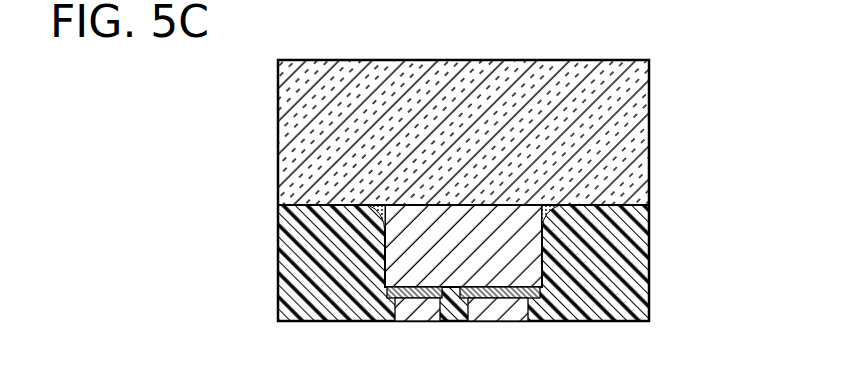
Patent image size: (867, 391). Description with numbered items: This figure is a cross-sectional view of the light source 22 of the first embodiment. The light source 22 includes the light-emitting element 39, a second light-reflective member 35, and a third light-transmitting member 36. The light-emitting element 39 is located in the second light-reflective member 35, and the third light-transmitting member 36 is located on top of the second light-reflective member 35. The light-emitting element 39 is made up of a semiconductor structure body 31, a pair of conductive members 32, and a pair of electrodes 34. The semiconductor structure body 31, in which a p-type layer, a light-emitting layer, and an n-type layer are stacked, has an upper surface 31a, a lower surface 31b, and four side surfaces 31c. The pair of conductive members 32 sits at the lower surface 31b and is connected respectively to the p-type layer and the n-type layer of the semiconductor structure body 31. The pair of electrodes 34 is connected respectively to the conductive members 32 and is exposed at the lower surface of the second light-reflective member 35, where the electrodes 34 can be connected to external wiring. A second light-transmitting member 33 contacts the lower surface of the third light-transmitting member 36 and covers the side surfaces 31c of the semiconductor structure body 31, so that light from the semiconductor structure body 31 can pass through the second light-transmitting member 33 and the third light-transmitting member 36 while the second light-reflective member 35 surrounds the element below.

The light source 22 is at (697, 38).
The semiconductor structure body 31 is at (515, 240).
The upper surface 31a is at (473, 205).
The lower surface 31b is at (452, 290).
The side surfaces 31c is at (385, 245).
The conductive members 32 is at (395, 292).
The second light-transmitting member 33 is at (372, 213).
The electrodes 34 is at (428, 308).
The second light-reflective member 35 is at (630, 300).
The third light-transmitting member 36 is at (632, 123).
The light-emitting element 39 is at (527, 191).